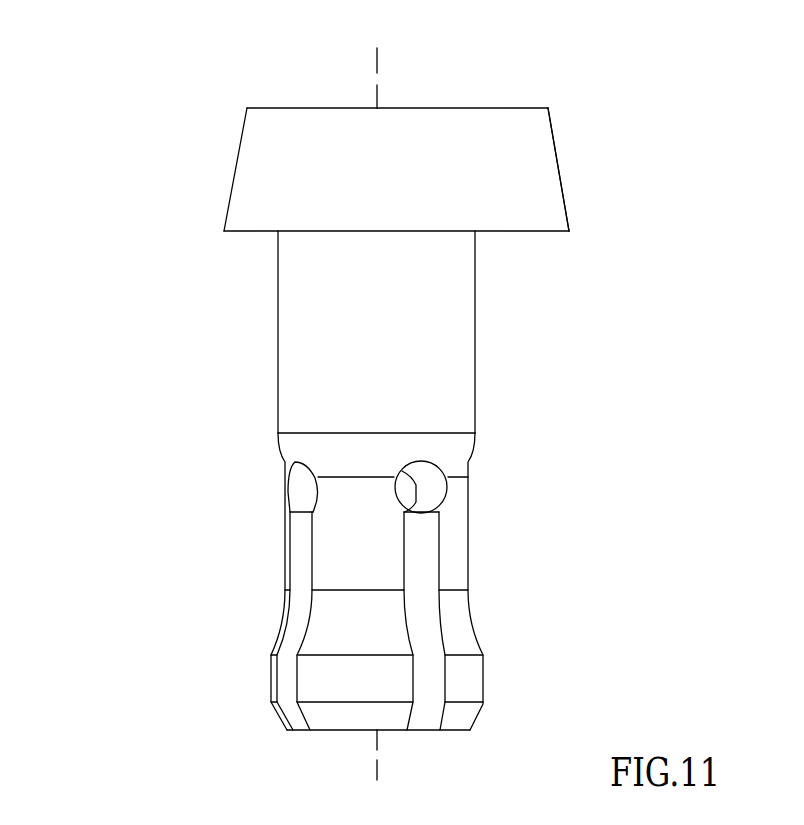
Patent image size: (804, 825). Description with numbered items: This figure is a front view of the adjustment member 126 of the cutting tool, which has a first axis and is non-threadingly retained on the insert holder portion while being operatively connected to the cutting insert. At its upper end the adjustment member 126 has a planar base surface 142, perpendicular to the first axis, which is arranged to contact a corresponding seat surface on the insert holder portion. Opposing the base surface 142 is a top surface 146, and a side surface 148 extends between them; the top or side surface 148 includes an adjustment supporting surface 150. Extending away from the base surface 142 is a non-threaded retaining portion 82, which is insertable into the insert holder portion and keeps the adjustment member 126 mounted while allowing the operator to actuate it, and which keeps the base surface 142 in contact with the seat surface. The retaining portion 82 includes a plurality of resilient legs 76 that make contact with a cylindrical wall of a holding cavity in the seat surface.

The adjustment member 126 is at (386, 398).
The top surface 146 is at (460, 167).
The side surface 148 is at (557, 148).
The adjustment supporting surface 150 is at (563, 183).
The planar base surface 142 is at (520, 232).
The non-threaded retaining portion 82 is at (308, 334).
The resilient legs 76 is at (368, 635).